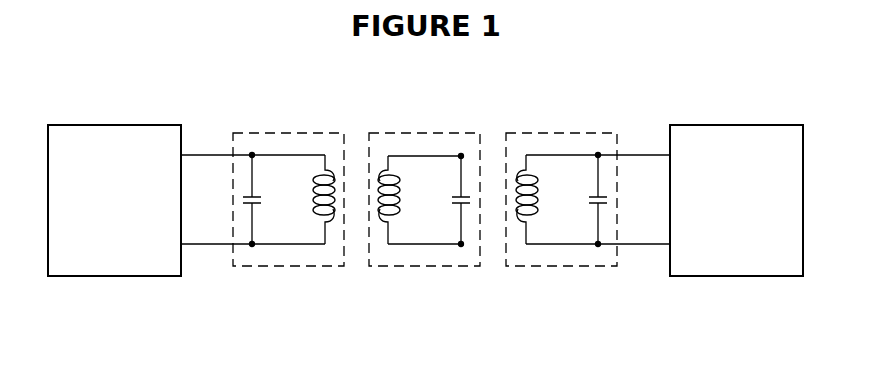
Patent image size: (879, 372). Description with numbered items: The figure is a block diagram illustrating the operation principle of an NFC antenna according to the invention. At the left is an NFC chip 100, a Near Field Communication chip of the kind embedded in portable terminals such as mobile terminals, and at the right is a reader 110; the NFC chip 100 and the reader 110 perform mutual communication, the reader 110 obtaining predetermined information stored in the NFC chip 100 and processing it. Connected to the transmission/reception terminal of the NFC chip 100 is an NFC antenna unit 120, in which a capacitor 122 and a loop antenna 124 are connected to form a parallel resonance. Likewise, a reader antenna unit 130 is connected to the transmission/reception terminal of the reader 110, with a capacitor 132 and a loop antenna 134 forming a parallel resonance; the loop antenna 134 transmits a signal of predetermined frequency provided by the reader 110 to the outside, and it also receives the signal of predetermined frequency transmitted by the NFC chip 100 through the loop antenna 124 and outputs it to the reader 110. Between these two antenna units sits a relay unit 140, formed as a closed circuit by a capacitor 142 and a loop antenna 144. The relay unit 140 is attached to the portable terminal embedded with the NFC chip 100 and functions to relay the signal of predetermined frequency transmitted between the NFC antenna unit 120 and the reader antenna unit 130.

The NFC chip 100 is at (116, 276).
The reader 110 is at (740, 276).
The NFC antenna unit 120 is at (290, 266).
The capacitor 122 is at (247, 200).
The loop antenna 124 is at (313, 201).
The reader antenna unit 130 is at (562, 266).
The capacitor 132 is at (603, 203).
The loop antenna 134 is at (540, 200).
The relay unit 140 is at (425, 266).
The capacitor 142 is at (457, 196).
The loop antenna 144 is at (400, 200).